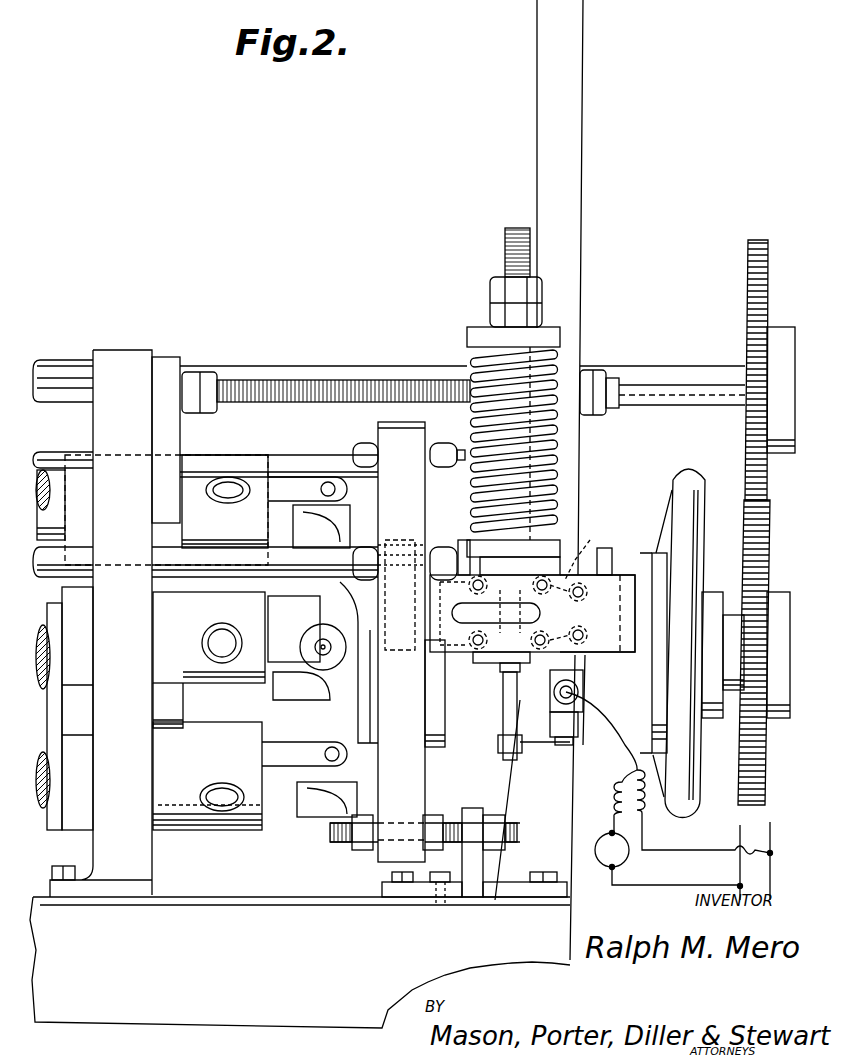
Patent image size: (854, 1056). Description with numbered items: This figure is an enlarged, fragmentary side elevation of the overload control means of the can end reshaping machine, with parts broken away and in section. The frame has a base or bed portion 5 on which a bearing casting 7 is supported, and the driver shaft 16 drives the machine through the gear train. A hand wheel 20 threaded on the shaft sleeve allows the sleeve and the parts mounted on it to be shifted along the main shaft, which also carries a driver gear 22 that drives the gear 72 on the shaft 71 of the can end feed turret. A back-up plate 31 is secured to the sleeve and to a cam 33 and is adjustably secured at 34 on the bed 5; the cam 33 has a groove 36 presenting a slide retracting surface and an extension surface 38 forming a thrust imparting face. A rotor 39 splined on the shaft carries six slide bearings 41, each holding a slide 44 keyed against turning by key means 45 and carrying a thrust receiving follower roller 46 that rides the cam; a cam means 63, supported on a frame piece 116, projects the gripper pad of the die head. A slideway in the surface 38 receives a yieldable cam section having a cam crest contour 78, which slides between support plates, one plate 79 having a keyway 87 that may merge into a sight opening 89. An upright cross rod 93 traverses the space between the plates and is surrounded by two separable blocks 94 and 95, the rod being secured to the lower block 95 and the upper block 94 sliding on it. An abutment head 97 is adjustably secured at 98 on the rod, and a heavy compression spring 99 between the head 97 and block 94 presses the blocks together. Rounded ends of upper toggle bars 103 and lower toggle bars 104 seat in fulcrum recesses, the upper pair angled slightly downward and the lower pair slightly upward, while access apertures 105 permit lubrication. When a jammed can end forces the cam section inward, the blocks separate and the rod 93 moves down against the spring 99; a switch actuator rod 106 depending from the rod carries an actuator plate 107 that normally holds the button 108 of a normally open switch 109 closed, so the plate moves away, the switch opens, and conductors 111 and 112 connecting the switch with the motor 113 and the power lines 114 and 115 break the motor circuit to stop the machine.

The base or bed portion 5 is at (155, 1010).
The bearing casting 7 is at (560, 858).
The driver shaft 16 is at (380, 653).
The hand wheel 20 is at (692, 478).
The driver gear 22 is at (745, 757).
The back-up plate 31 is at (385, 432).
The cam 33 is at (378, 698).
The adjustable securing means 34 is at (432, 823).
The groove 36 is at (264, 735).
The extension surface 38 is at (372, 738).
The rotor 39 is at (85, 708).
The slide bearings 41 is at (195, 482).
The slide 44 is at (282, 480).
The key means 45 is at (232, 488).
The thrust receiving follower roller 46 is at (300, 523).
The cam means 63 is at (175, 375).
The shaft 71 is at (705, 372).
The gear 72 is at (747, 303).
The cam crest contour 78 is at (400, 562).
The support plate 79 is at (612, 575).
The keyway 87 is at (432, 550).
The sight opening 89 is at (600, 652).
The cross rod 93 is at (505, 232).
The upper block 94 is at (575, 580).
The lower block 95 is at (510, 620).
The abutment head 97 is at (475, 327).
The adjustable securing means 98 is at (495, 278).
The compression spring 99 is at (545, 458).
The upper toggle bars 103 is at (592, 538).
The lower toggle bars 104 is at (489, 670).
The access apertures 105 is at (565, 600).
The switch actuator rod 106 is at (500, 745).
The actuator plate 107 is at (522, 765).
The button 108 is at (548, 745).
The switch 109 is at (565, 722).
The conductor 111 is at (645, 838).
The conductor 112 is at (612, 815).
The motor 113 is at (628, 862).
The power line 114 is at (745, 840).
The power line 115 is at (740, 876).
The frame piece 116 is at (125, 365).